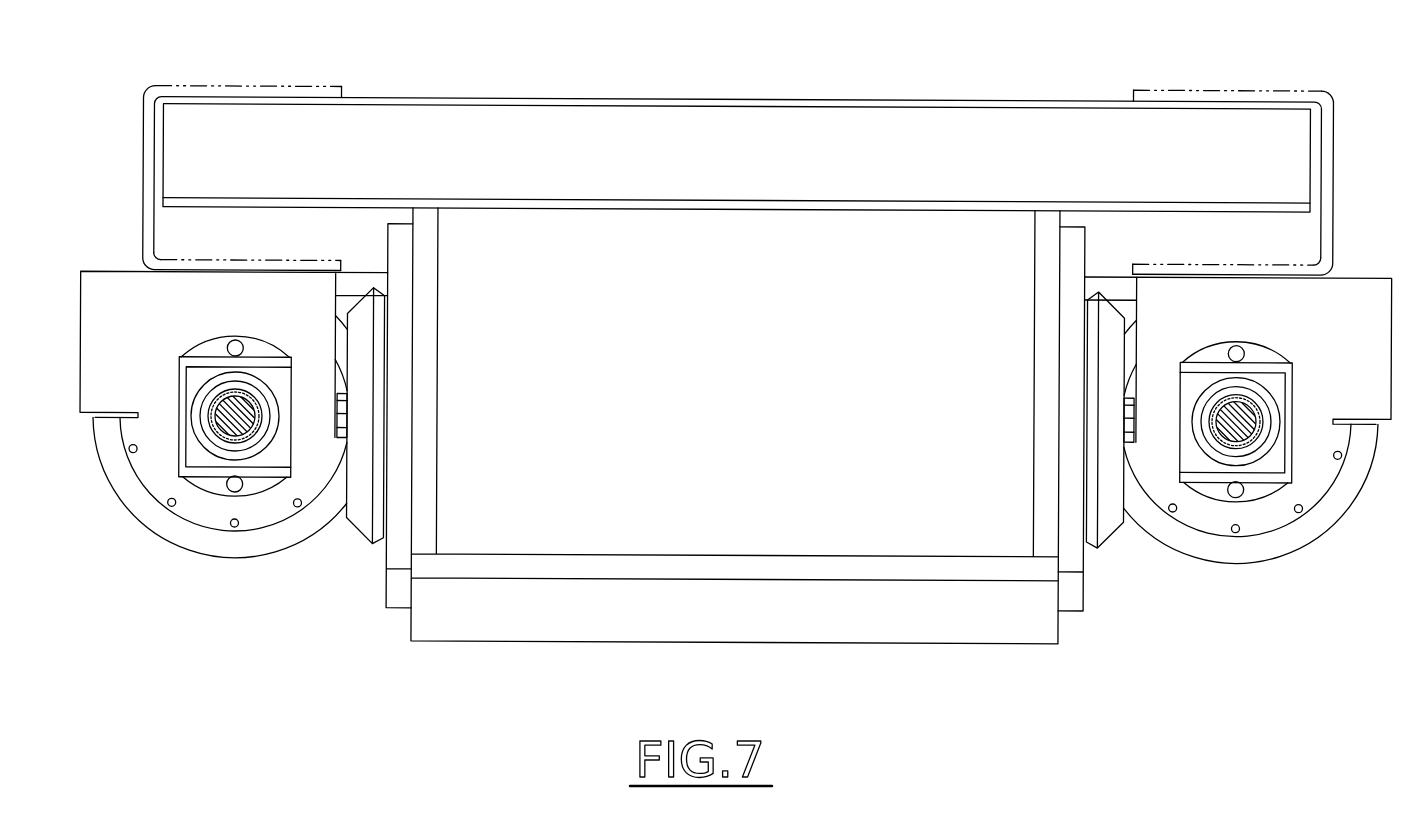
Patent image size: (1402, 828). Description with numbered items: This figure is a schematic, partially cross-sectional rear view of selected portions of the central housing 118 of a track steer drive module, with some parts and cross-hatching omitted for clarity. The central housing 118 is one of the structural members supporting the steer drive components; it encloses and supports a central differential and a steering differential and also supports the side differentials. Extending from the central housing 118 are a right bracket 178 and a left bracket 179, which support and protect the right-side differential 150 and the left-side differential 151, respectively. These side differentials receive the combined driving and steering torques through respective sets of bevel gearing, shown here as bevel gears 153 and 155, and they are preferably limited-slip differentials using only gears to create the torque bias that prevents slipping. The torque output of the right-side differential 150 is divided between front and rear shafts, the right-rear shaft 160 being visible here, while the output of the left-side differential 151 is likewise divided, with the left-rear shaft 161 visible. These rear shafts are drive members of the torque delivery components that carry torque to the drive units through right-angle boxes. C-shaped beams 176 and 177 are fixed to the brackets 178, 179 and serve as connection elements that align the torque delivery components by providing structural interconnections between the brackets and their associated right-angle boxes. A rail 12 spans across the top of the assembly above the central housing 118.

The rail / channel beam 12 is at (148, 139).
The central housing 118 is at (731, 378).
The right-side differential 150 is at (1220, 545).
The left-side differential 151 is at (205, 542).
The bevel gear 153 is at (1102, 518).
The bevel gear 155 is at (363, 508).
The right-rear shaft 160 is at (1247, 437).
The left-rear shaft 161 is at (217, 420).
The C-shaped beam 176 is at (1290, 384).
The C-shaped beam 177 is at (180, 375).
The right bracket 178 is at (1238, 340).
The left bracket 179 is at (258, 292).